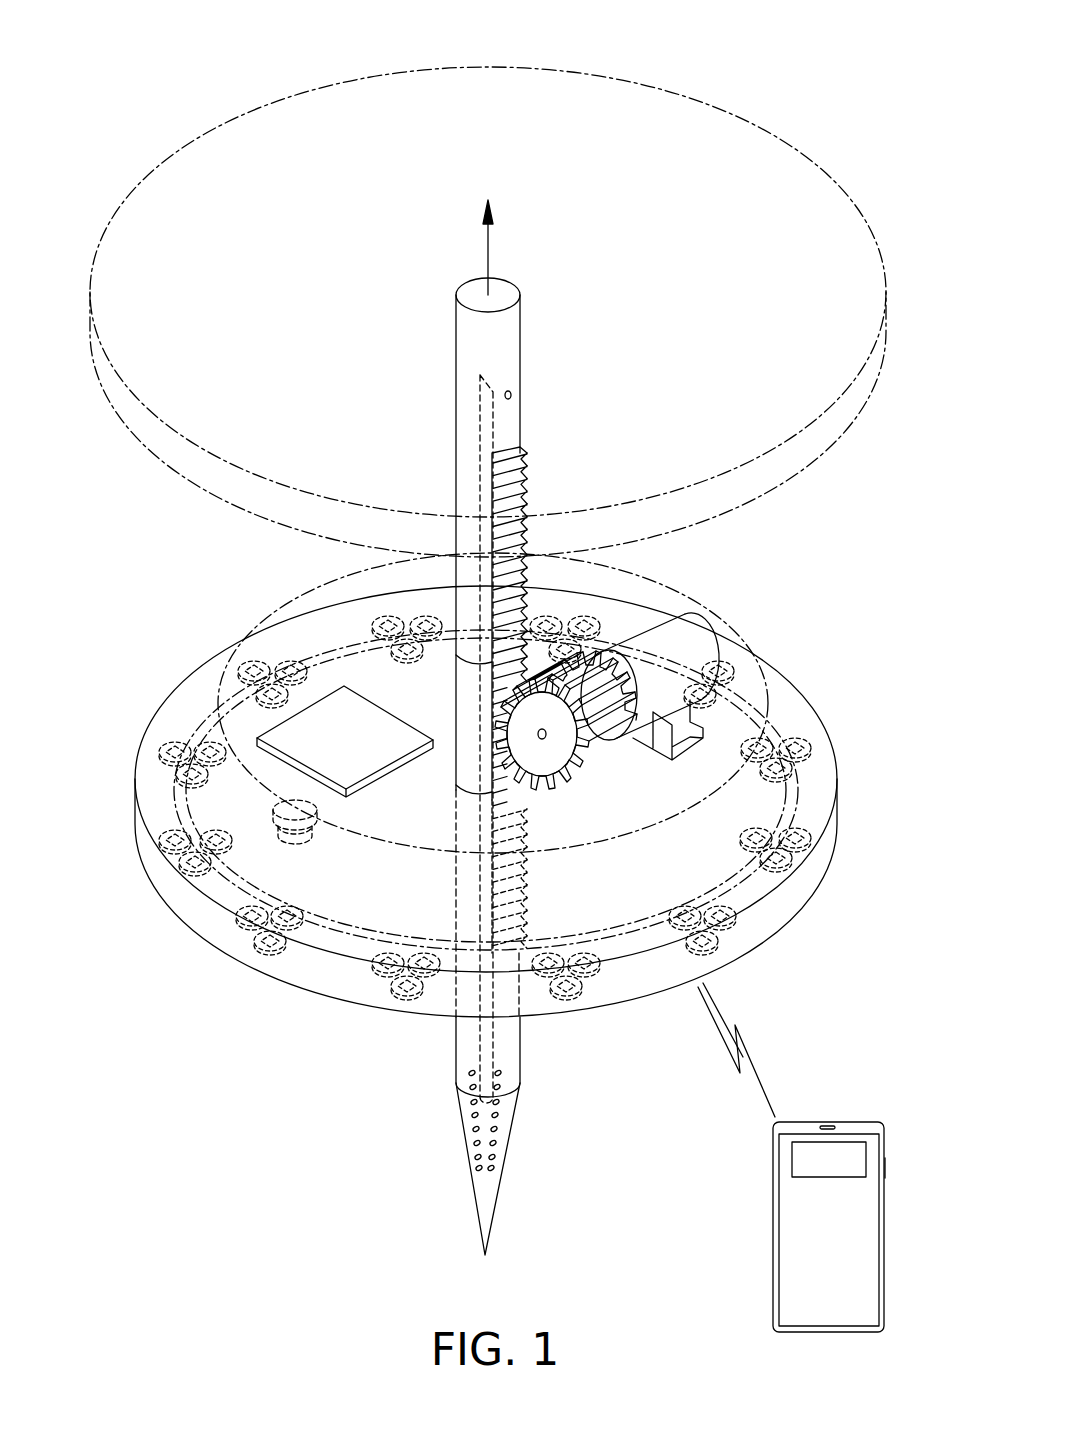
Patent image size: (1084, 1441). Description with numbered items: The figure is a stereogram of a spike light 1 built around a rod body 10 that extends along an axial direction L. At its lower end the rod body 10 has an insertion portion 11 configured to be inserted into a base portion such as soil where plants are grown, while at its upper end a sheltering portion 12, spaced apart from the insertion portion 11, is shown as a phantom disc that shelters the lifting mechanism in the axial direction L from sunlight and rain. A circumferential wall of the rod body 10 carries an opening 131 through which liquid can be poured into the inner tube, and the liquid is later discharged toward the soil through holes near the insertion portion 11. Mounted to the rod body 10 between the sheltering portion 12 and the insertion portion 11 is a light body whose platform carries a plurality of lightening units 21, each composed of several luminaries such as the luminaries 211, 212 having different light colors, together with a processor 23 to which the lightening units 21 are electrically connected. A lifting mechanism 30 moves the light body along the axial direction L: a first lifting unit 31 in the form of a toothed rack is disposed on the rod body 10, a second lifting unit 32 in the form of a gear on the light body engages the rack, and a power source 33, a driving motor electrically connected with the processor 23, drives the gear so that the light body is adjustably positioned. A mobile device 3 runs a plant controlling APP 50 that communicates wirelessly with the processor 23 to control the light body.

The spike light 1 is at (502, 629).
The rod body 10 is at (511, 690).
The insertion portion 11 is at (507, 1148).
The sheltering portion 12 is at (640, 82).
The opening 131 is at (515, 397).
The lightening unit 21 is at (524, 785).
The luminary 211 is at (805, 760).
The luminary 212 is at (765, 745).
The processor 23 is at (285, 731).
The lifting mechanism 30 is at (670, 700).
The first lifting unit 31 is at (527, 492).
The second lifting unit 32 is at (577, 677).
The power source 33 is at (673, 637).
The mobile device 3 is at (790, 1201).
The plant controlling APP 50 is at (853, 1143).
The axial direction L is at (486, 247).